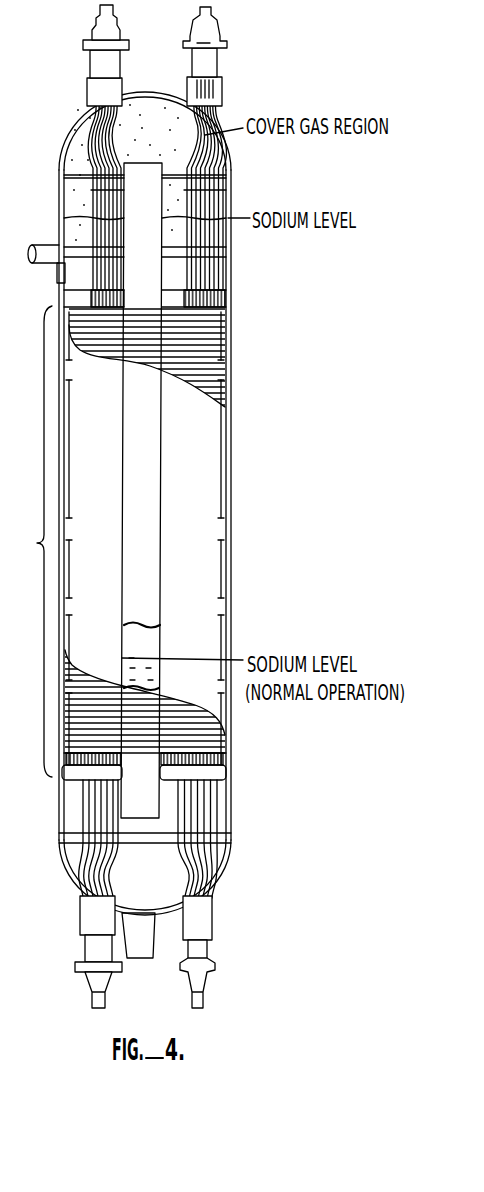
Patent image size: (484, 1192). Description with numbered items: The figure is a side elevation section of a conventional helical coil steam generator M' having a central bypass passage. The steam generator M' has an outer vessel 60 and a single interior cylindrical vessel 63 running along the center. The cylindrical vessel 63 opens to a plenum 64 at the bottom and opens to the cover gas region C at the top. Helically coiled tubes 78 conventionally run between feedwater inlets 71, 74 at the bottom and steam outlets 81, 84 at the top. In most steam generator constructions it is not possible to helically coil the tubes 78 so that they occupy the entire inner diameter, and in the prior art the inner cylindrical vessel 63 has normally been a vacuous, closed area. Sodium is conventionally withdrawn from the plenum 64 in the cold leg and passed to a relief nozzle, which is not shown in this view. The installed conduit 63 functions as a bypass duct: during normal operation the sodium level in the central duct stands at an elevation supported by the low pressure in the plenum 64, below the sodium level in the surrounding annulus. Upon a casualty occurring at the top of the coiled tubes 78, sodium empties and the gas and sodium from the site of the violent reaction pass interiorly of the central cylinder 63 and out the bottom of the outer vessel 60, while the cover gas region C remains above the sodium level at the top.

The outer vessel 60 is at (229, 577).
The interior cylindrical vessel 63 is at (166, 613).
The plenum 64 is at (118, 877).
The feedwater inlet 71 is at (82, 950).
The feedwater inlet 74 is at (213, 961).
The helically coiled tubes 78 is at (32, 541).
The steam outlet 81 is at (90, 62).
The steam outlet 84 is at (213, 62).
The steam generator M' is at (166, 538).
The cover gas region C is at (161, 136).